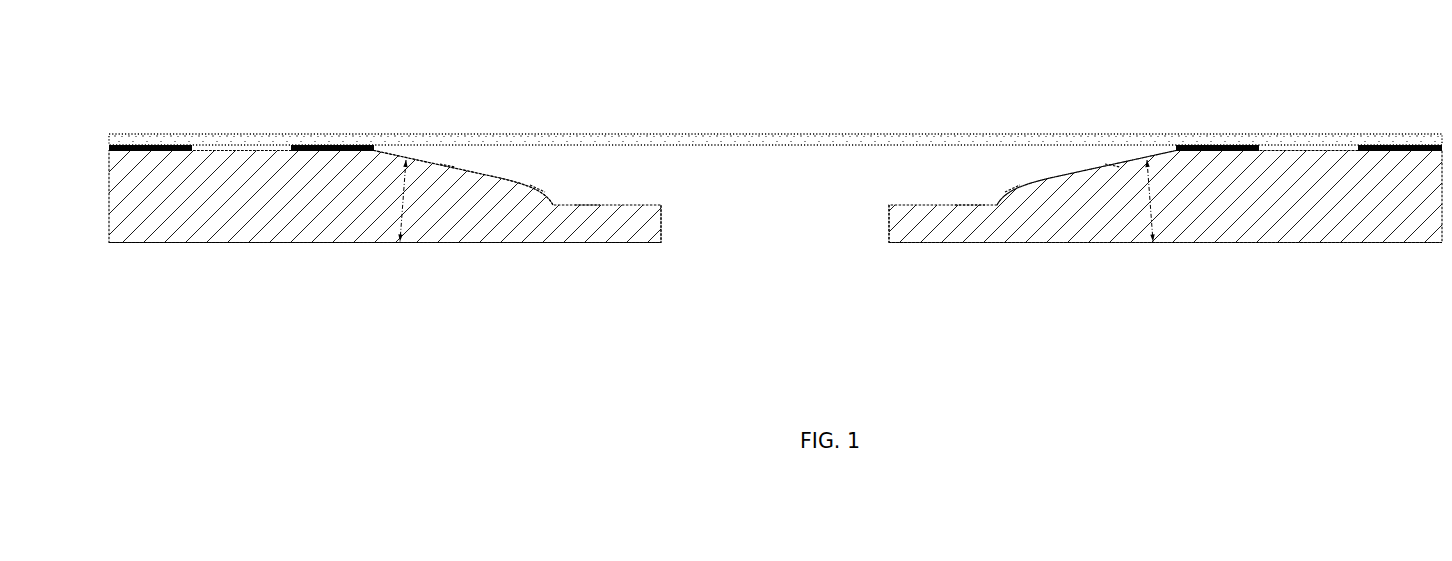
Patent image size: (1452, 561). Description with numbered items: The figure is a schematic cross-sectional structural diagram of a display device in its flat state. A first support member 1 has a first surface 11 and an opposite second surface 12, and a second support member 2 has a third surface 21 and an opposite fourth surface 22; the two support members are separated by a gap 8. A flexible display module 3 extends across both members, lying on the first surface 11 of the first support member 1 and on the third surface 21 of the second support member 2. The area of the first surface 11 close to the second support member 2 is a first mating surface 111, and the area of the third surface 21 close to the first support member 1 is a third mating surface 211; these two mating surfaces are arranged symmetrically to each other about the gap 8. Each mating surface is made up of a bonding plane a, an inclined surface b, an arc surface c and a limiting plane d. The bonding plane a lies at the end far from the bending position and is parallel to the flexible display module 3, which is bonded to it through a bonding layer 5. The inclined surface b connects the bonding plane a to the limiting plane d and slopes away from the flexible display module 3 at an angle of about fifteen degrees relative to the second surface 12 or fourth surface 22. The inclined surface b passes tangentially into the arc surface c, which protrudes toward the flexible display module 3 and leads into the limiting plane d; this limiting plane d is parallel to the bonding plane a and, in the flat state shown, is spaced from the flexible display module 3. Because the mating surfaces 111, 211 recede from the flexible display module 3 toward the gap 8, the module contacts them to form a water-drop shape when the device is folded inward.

The first support member 1 is at (166, 222).
The second support member 2 is at (1391, 220).
The flexible display module 3 is at (758, 137).
The bonding layer 5 is at (148, 146).
The gap 8 is at (792, 215).
The first surface 11 is at (222, 148).
The second surface 12 is at (260, 245).
The third surface 21 is at (1336, 148).
The fourth surface 22 is at (1297, 245).
The first mating surface 111 is at (587, 106).
The third mating surface 211 is at (972, 106).
The bonding plane a is at (353, 146).
The inclined surface b is at (447, 162).
The arc surface c is at (537, 186).
The limiting plane d is at (585, 203).